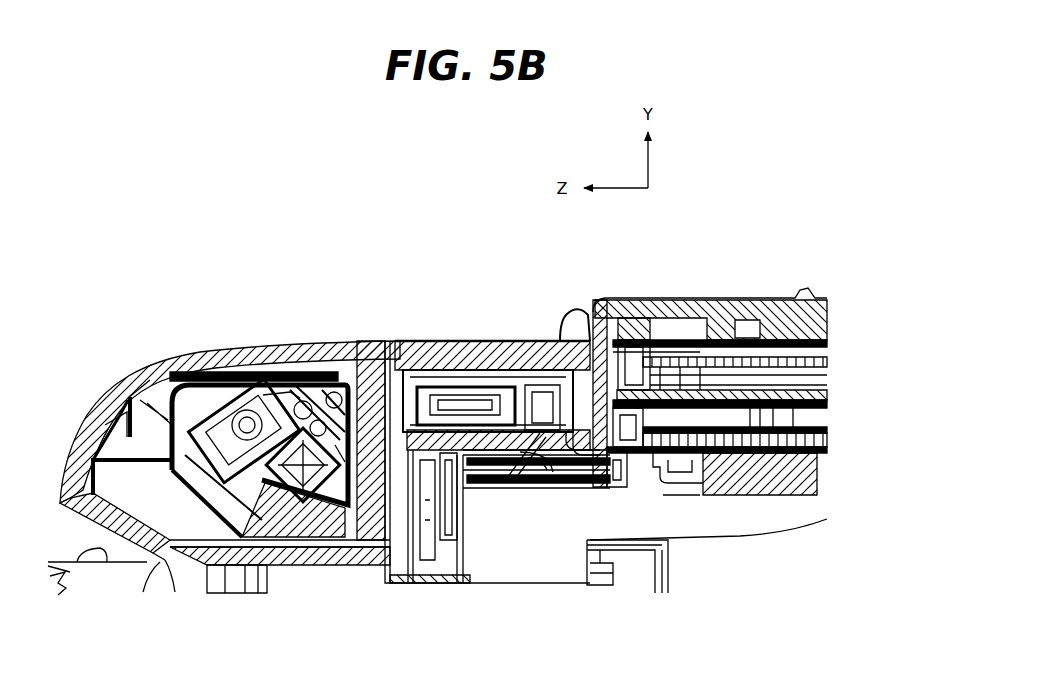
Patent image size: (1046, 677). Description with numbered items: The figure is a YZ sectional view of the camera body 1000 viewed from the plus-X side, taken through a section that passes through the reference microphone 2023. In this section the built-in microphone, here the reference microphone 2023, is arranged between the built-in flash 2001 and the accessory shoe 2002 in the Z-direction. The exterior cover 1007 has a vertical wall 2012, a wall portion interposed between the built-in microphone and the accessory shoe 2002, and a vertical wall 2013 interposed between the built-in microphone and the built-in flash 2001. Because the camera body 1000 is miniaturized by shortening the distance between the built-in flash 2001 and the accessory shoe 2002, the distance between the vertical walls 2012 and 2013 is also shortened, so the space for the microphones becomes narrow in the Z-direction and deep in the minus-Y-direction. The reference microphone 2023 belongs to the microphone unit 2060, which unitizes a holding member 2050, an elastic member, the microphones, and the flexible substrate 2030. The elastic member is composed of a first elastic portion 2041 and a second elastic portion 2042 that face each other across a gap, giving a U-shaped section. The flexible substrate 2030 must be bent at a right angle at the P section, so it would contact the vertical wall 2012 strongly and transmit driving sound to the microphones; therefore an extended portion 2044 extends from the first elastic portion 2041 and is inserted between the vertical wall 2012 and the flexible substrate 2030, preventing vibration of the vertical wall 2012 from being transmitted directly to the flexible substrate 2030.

The camera body 1000 is at (164, 313).
The built-in flash 2001 is at (290, 344).
The accessory shoe 2002 is at (683, 300).
The vertical wall 2012 is at (610, 487).
The vertical wall 2013 is at (352, 565).
The reference microphone 2023 is at (432, 347).
The flexible substrate 2030 is at (527, 390).
The first elastic portion 2041 is at (490, 378).
The second elastic portion 2042 is at (517, 493).
The extended portion 2044 is at (572, 563).
The holding member 2050 is at (443, 440).
The microphone unit 2060 is at (553, 563).
The exterior cover 1007 is at (543, 350).
The P section P is at (578, 318).